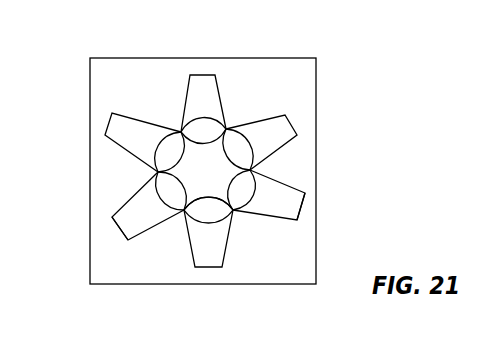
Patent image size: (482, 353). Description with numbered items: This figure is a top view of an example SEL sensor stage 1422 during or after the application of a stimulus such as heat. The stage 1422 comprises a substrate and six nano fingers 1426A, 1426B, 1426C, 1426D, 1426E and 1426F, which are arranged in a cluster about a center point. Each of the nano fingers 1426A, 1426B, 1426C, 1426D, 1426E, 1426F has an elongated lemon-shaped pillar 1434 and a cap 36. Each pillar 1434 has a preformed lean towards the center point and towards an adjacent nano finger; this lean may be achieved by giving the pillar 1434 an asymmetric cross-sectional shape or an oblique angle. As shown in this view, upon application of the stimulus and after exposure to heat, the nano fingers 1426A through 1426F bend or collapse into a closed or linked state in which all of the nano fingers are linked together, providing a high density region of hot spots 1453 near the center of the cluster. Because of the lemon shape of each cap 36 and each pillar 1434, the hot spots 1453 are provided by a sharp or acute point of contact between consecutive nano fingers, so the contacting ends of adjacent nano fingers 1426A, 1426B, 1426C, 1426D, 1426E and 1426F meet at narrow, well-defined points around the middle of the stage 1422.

The SEL sensor stage 1422 is at (336, 117).
The nano finger 1426A is at (128, 106).
The nano finger 1426B is at (226, 99).
The nano finger 1426C is at (290, 150).
The nano finger 1426D is at (257, 226).
The nano finger 1426E is at (188, 245).
The nano finger 1426F is at (120, 199).
The hot spots 1453 is at (181, 132).
The pillar 1434 is at (133, 238).
The cap 36 is at (207, 212).